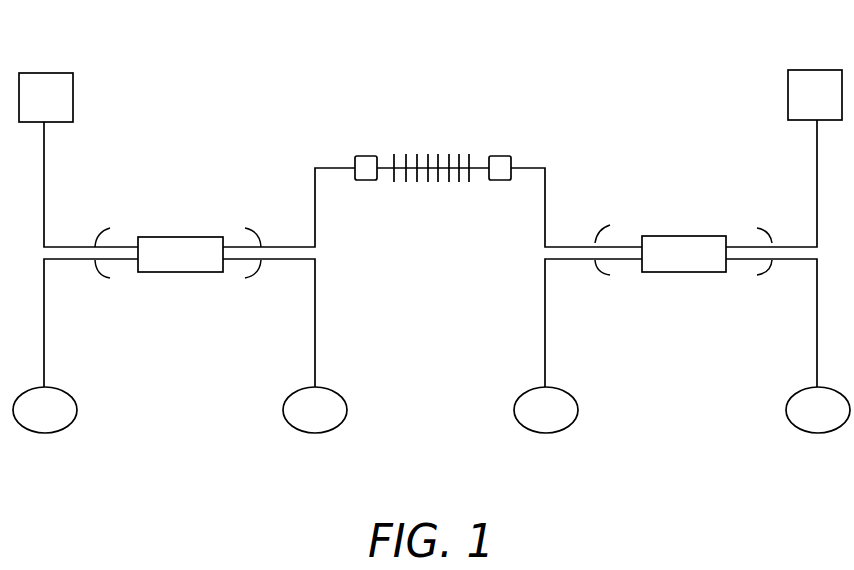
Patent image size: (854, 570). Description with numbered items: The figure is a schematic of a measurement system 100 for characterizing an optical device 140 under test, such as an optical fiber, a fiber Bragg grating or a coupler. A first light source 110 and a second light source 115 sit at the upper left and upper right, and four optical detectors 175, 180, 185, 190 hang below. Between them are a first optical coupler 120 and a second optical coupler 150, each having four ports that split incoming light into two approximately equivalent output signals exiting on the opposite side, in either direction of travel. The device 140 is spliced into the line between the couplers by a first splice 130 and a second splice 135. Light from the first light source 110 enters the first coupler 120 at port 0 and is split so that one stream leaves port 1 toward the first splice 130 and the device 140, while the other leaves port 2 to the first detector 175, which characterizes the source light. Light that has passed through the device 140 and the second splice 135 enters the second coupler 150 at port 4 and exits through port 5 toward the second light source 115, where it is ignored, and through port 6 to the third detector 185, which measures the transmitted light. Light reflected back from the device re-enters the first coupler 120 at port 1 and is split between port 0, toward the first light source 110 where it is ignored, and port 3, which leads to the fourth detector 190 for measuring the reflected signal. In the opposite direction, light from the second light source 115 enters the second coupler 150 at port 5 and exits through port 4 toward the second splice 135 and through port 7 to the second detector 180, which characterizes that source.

The measurement system 100 is at (602, 105).
The first light source 110 is at (26, 110).
The second light source 115 is at (796, 108).
The first optical coupler 120 is at (159, 265).
The first optical splice 130 is at (365, 155).
The second optical splice 135 is at (500, 155).
The optical device 140 is at (437, 173).
The second optical coupler 150 is at (664, 270).
The first detector 175 is at (334, 423).
The second detector 180 is at (566, 423).
The third detector 185 is at (840, 423).
The fourth detector 190 is at (64, 423).
The port 0 is at (109, 230).
The port 1 is at (246, 230).
The port 2 is at (246, 274).
The port 3 is at (109, 274).
The port 4 is at (610, 228).
The port 5 is at (756, 228).
The port 6 is at (756, 275).
The port 7 is at (610, 275).